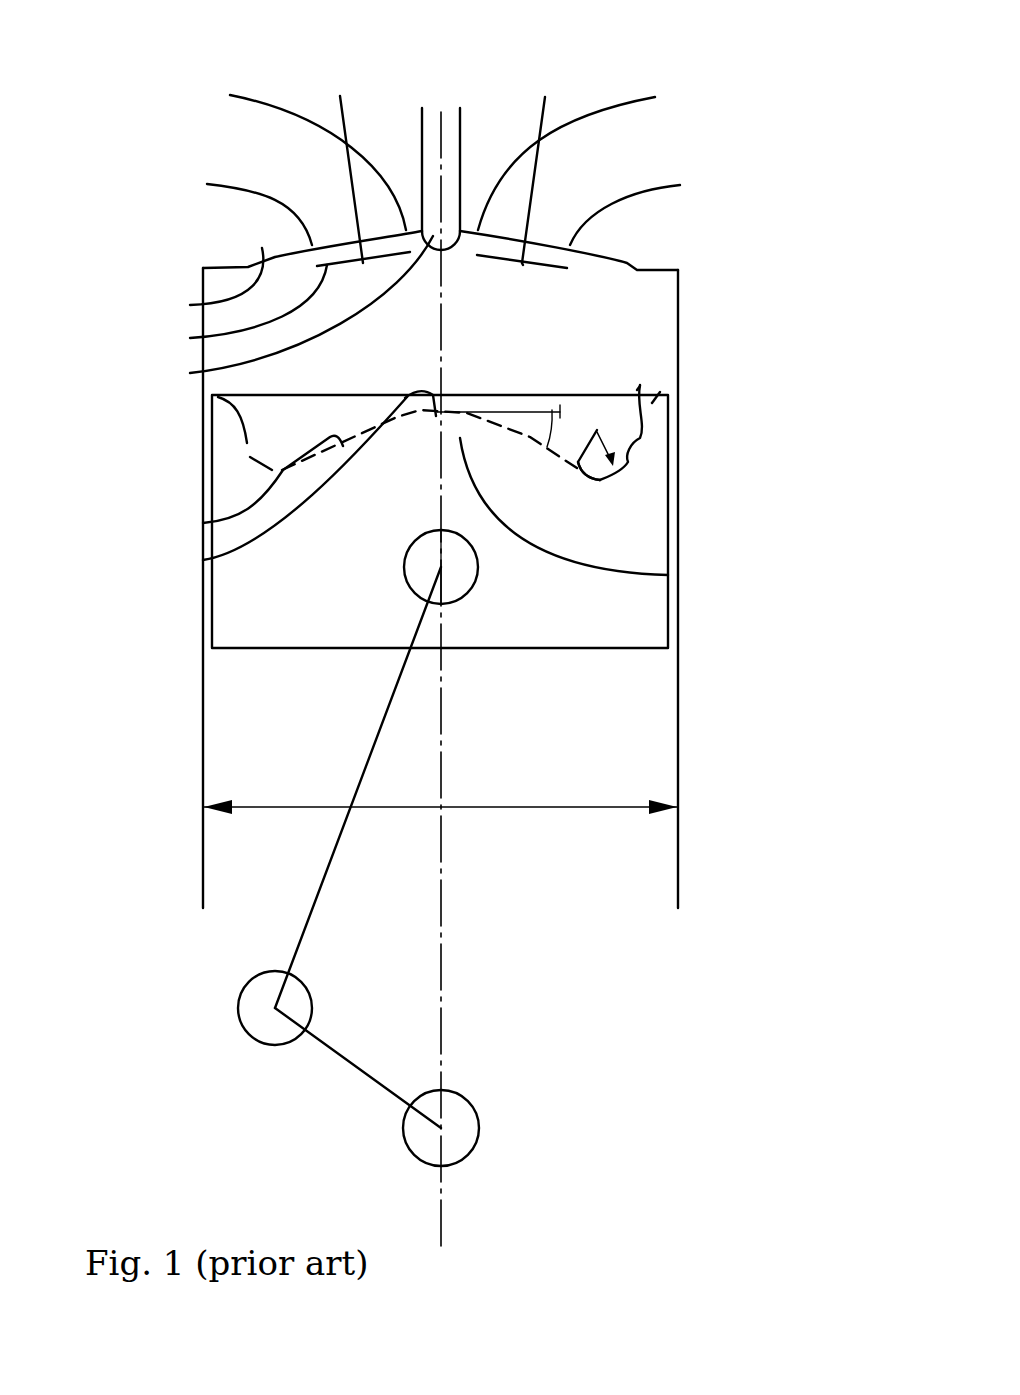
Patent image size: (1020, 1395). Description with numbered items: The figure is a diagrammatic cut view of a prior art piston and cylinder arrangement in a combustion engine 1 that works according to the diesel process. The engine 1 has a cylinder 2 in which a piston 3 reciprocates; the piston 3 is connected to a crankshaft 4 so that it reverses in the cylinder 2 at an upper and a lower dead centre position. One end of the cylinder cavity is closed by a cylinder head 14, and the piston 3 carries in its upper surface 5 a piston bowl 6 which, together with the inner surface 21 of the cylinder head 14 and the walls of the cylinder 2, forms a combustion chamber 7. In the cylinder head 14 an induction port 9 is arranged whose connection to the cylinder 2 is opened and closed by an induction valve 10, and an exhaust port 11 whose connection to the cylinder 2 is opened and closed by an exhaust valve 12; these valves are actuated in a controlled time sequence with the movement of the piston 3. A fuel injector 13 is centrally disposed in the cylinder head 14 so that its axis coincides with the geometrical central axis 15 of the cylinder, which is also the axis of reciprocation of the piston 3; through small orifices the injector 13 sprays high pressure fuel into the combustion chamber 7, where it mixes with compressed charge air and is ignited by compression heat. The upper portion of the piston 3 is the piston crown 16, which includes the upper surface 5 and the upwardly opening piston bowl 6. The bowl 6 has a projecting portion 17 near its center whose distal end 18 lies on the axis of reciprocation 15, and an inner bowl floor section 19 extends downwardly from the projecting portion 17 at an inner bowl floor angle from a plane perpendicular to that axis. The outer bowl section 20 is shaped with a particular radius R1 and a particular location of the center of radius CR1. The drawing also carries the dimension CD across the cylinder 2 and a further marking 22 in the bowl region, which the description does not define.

The combustion engine 1 is at (609, 73).
The cylinder 2 is at (657, 290).
The piston 3 is at (653, 530).
The crankshaft 4 is at (478, 1118).
The upper surface 5 is at (602, 395).
The piston bowl 6 is at (630, 458).
The combustion chamber 7 is at (277, 448).
The induction port 9 is at (635, 97).
The induction valve 10 is at (547, 263).
The exhaust port 11 is at (260, 100).
The exhaust valve 12 is at (190, 338).
The fuel injector 13 is at (190, 373).
The cylinder head 14 is at (262, 248).
The geometrical central axis 15 is at (443, 1050).
The piston crown 16 is at (655, 405).
The projecting portion 17 is at (668, 575).
The distal end 18 is at (203, 560).
The inner bowl floor section 19 is at (203, 523).
The outer bowl section 20 is at (245, 452).
The inner surface 21 is at (190, 305).
The valve pocket rim 22 is at (643, 417).
The cylinder diameter (bore) CD is at (617, 800).
The radius R1 is at (600, 480).
The center of radius CR1 is at (607, 435).